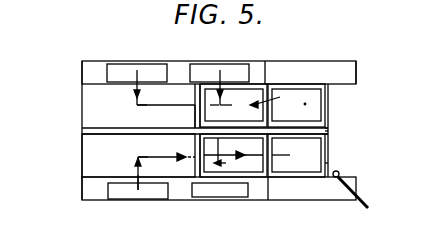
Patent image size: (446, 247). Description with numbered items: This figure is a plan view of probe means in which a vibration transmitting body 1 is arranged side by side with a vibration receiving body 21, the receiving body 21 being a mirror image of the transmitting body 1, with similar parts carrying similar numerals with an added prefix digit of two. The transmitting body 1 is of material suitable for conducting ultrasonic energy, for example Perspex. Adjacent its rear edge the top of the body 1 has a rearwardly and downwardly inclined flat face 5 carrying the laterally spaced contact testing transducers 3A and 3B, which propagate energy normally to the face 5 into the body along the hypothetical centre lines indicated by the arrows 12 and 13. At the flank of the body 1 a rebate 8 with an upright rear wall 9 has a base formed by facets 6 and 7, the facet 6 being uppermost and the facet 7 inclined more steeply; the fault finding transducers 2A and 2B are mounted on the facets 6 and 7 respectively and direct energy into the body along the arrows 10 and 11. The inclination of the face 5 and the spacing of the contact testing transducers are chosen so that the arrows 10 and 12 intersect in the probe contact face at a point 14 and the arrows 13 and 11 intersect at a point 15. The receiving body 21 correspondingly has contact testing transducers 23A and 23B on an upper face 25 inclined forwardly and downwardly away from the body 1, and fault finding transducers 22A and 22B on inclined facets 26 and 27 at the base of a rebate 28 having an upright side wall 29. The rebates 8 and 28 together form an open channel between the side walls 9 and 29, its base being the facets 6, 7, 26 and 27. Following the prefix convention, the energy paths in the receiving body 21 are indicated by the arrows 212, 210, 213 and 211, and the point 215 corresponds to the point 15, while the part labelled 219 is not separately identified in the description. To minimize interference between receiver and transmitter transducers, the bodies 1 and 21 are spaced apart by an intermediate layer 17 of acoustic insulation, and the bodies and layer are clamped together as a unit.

The body 1 is at (85, 107).
The rearwardly and downwardly inclined flat face 5 is at (90, 62).
The contact testing transducer 3A is at (120, 70).
The contact testing transducer 3B is at (215, 70).
The facet 6 is at (197, 97).
The fault finding transducer 2A is at (252, 93).
The fault finding transducer 2B is at (316, 92).
The upright rear wall 9 is at (352, 84).
The rebate 8 is at (329, 108).
The arrow 12 is at (133, 100).
The arrow 10 is at (157, 98).
The point 14 is at (137, 105).
The point 215 is at (197, 125).
The arrow 13 is at (227, 90).
The arrow 11 is at (274, 100).
The point 15 is at (226, 105).
The facet 7 is at (329, 128).
The intermediate layer 17 is at (329, 131).
The inclined facet 27 is at (329, 135).
The rebate 28 is at (329, 163).
The upright side wall 29 is at (361, 196).
The receiving body 21 is at (85, 157).
The lower passage corner 219 is at (138, 157).
The inclined facet 26 is at (196, 138).
The arrow 212 is at (136, 167).
The arrow 210 is at (157, 173).
The fault finding transducer 22A is at (208, 128).
The arrow 213 is at (233, 155).
The fault finding transducer 22B is at (318, 167).
The arrow 211 is at (276, 155).
The upper face 25 is at (98, 195).
The contact testing transducer 23A is at (128, 193).
The contact testing transducer 23B is at (210, 191).